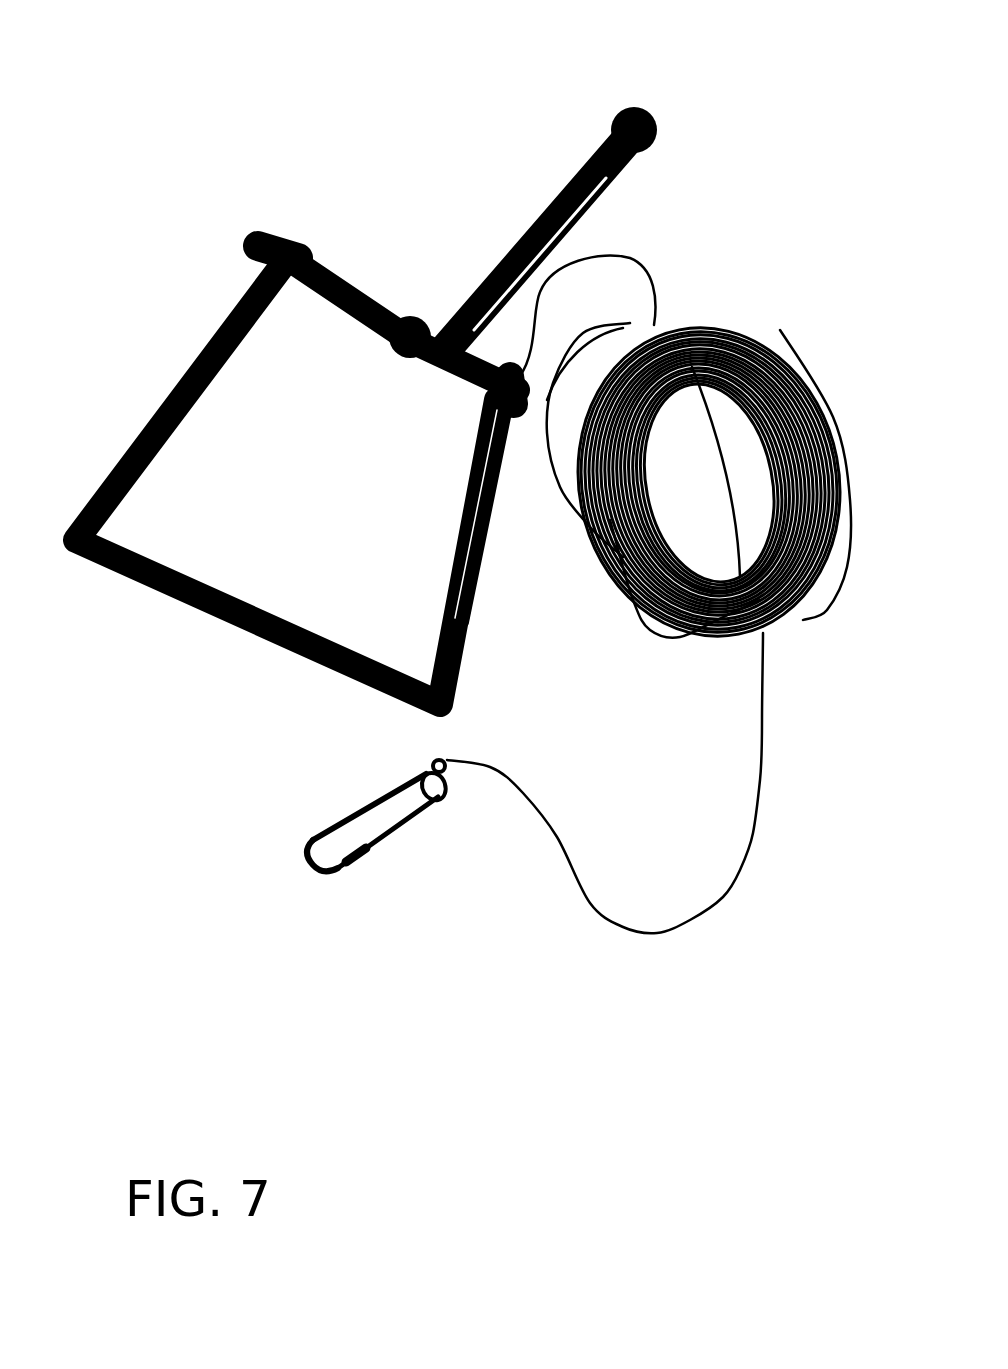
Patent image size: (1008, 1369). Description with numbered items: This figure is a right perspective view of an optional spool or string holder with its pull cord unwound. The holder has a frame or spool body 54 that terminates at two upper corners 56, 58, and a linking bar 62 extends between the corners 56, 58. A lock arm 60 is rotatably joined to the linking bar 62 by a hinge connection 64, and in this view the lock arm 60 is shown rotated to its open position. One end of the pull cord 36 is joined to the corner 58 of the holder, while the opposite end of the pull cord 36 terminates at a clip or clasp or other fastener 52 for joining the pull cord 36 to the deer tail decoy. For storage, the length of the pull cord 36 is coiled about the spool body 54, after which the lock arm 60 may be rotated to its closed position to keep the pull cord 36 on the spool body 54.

The pull cord 36 is at (757, 848).
The clip 52 is at (306, 866).
The spool body 54 is at (221, 338).
The upper corner 56 is at (283, 232).
The upper corner 58 is at (588, 256).
The lock arm 60 is at (577, 160).
The linking bar 62 is at (345, 280).
The hinge connection 64 is at (413, 314).